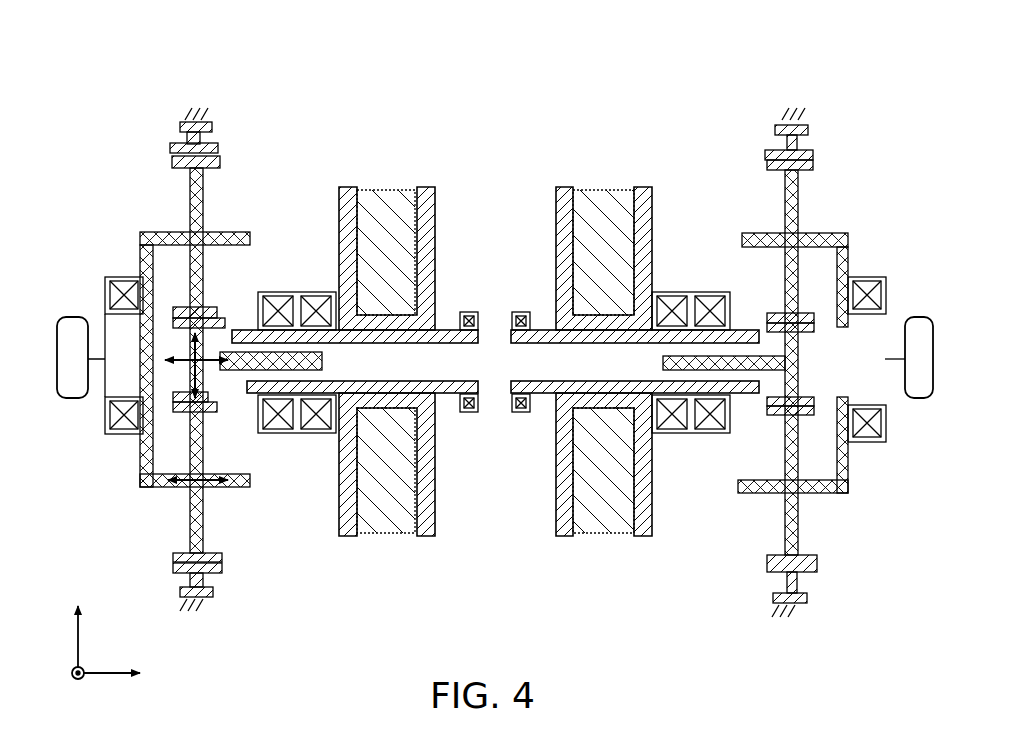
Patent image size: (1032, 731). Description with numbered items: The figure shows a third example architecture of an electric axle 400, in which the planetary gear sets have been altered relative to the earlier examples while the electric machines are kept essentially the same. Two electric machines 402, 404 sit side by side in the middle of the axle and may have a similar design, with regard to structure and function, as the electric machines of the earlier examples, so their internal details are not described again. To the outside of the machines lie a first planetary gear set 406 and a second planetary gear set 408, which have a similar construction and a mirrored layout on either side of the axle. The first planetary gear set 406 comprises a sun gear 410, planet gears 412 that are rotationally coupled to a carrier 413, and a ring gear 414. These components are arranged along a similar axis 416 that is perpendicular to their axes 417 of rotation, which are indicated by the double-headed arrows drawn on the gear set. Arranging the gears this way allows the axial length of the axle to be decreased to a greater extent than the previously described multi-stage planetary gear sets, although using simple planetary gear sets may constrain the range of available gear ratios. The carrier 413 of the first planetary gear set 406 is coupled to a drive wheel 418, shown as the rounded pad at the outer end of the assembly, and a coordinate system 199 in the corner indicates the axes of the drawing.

The electric axle 400 is at (88, 157).
The first planetary gear set 406 is at (166, 114).
The second planetary gear set 408 is at (833, 124).
The electric machine 402 is at (397, 176).
The electric machine 404 is at (600, 176).
The sun gear 410 is at (180, 328).
The planet gears 412 is at (221, 161).
The carrier 413 is at (248, 237).
The ring gear 414 is at (219, 147).
The axis 416 is at (204, 379).
The axes of rotation 417 is at (208, 350).
The drive wheel 418 is at (70, 313).
The coordinate axes 199 is at (92, 664).